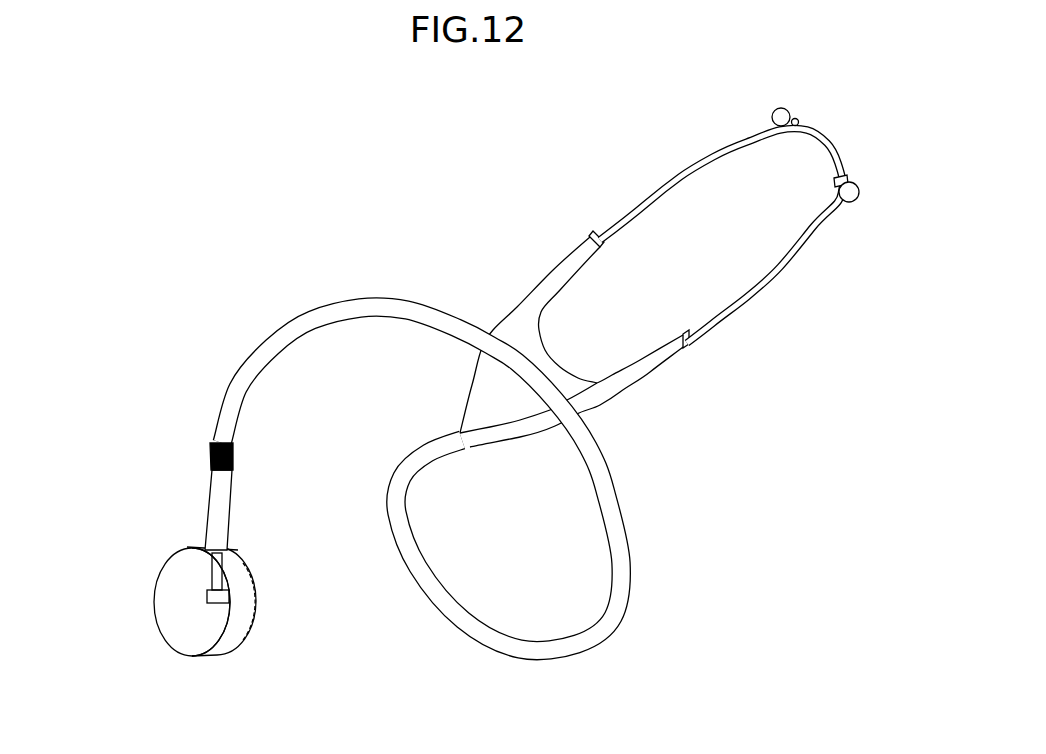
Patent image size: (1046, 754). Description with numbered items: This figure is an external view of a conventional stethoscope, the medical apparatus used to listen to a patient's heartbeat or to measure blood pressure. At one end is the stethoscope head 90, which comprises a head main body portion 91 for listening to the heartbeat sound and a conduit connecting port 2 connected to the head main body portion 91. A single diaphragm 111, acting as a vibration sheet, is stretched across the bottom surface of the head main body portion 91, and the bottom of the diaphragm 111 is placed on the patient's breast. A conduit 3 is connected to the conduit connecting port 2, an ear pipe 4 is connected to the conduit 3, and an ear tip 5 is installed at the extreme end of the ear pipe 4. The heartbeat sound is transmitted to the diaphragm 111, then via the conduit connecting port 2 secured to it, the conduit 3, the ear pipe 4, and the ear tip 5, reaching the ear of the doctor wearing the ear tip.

The conduit connecting port 2 is at (225, 554).
The conduit 3 is at (367, 300).
The ear pipe 4 is at (757, 293).
The ear tip 5 is at (850, 184).
The stethoscope head 90 is at (207, 567).
The head main body portion 91 is at (188, 540).
The diaphragm 111 is at (256, 590).